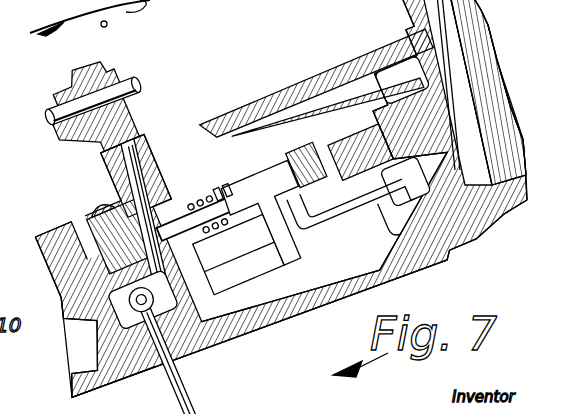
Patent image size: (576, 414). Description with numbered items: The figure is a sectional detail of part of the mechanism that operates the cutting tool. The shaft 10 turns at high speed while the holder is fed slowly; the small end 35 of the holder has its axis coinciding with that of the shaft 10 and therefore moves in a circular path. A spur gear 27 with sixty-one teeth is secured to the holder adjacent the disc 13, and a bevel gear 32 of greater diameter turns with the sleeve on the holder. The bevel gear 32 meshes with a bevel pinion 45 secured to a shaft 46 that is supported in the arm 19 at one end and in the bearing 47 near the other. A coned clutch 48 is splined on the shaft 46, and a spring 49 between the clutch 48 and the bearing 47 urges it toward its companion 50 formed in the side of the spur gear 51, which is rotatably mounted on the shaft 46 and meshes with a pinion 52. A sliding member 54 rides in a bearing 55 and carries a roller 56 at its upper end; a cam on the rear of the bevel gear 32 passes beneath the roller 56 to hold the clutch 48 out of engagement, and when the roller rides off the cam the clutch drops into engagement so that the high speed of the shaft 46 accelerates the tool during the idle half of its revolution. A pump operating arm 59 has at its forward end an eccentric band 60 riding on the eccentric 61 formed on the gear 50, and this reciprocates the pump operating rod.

The shaft 10 is at (520, 222).
The disc 13 is at (360, 62).
The arm 19 is at (70, 300).
The spur gear 27 is at (430, 96).
The bevel gear 32 is at (352, 157).
The small end of holder 35 is at (497, 80).
The bevel pinion 45 is at (302, 158).
The shaft 46 is at (215, 228).
The bearing 47 is at (282, 172).
The coned clutch 48 is at (150, 172).
The spring 49 is at (226, 192).
The clutch companion 50 is at (118, 192).
The spur gear 51 is at (106, 157).
The pinion 52 is at (92, 68).
The sliding member 54 is at (385, 236).
The bearing 55 is at (247, 270).
The roller 56 is at (370, 222).
The pump operating arm 59 is at (170, 402).
The eccentric band 60 is at (100, 204).
The eccentric 61 is at (55, 247).